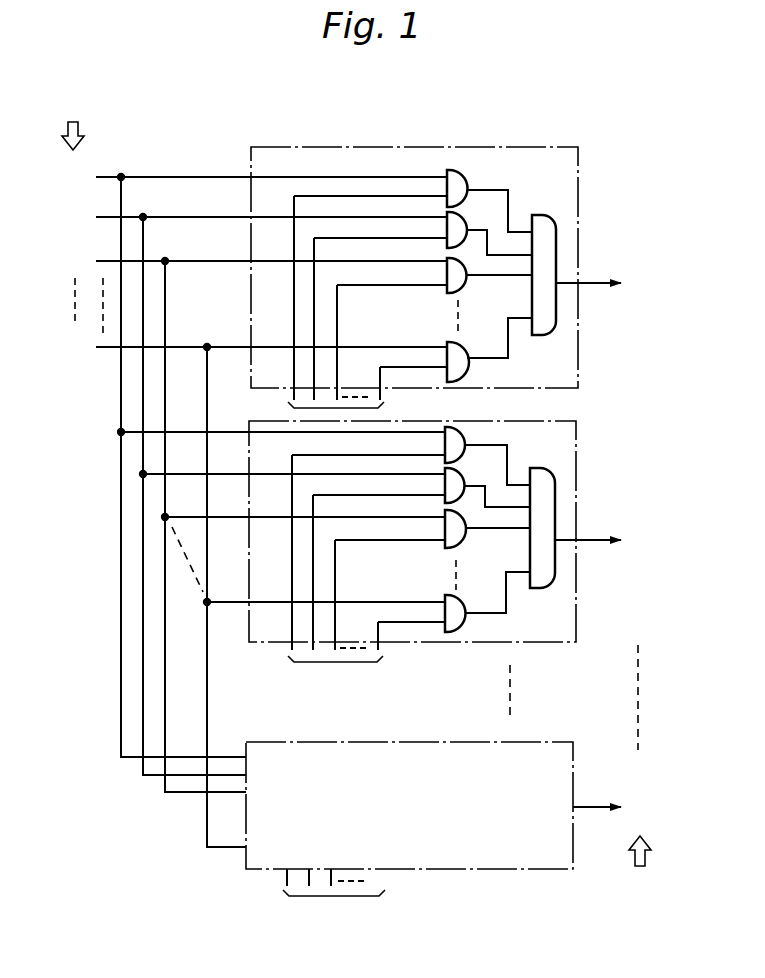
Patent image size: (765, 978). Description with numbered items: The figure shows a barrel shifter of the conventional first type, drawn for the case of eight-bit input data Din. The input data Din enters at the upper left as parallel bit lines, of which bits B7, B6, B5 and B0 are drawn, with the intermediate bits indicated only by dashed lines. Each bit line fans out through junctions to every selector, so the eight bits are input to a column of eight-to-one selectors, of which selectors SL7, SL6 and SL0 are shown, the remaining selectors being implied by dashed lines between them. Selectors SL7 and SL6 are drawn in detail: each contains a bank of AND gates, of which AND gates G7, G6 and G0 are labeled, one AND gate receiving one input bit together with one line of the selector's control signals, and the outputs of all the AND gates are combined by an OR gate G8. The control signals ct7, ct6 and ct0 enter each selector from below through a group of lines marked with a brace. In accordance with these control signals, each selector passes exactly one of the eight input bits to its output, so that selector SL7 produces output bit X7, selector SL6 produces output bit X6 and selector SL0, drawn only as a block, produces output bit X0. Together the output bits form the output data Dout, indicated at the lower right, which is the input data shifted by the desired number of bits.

The input data Din is at (68, 121).
The output data Dout is at (641, 870).
The bit B7 is at (252, 460).
The bit B6 is at (252, 490).
The bit B5 is at (252, 521).
The bit B0 is at (252, 591).
The 8-1 selector SL7 is at (505, 147).
The 8-1 selector SL6 is at (528, 421).
The 8-1 selector SL0 is at (537, 742).
The AND gate G7 is at (463, 174).
The AND gate G6 is at (463, 220).
The AND gate G0 is at (463, 372).
The OR gate G8 is at (546, 215).
The bit X7 is at (606, 284).
The bit X6 is at (606, 541).
The bit X0 is at (613, 807).
The control signals ct7 is at (367, 309).
The control signals ct6 is at (366, 573).
The control signals ct0 is at (334, 895).